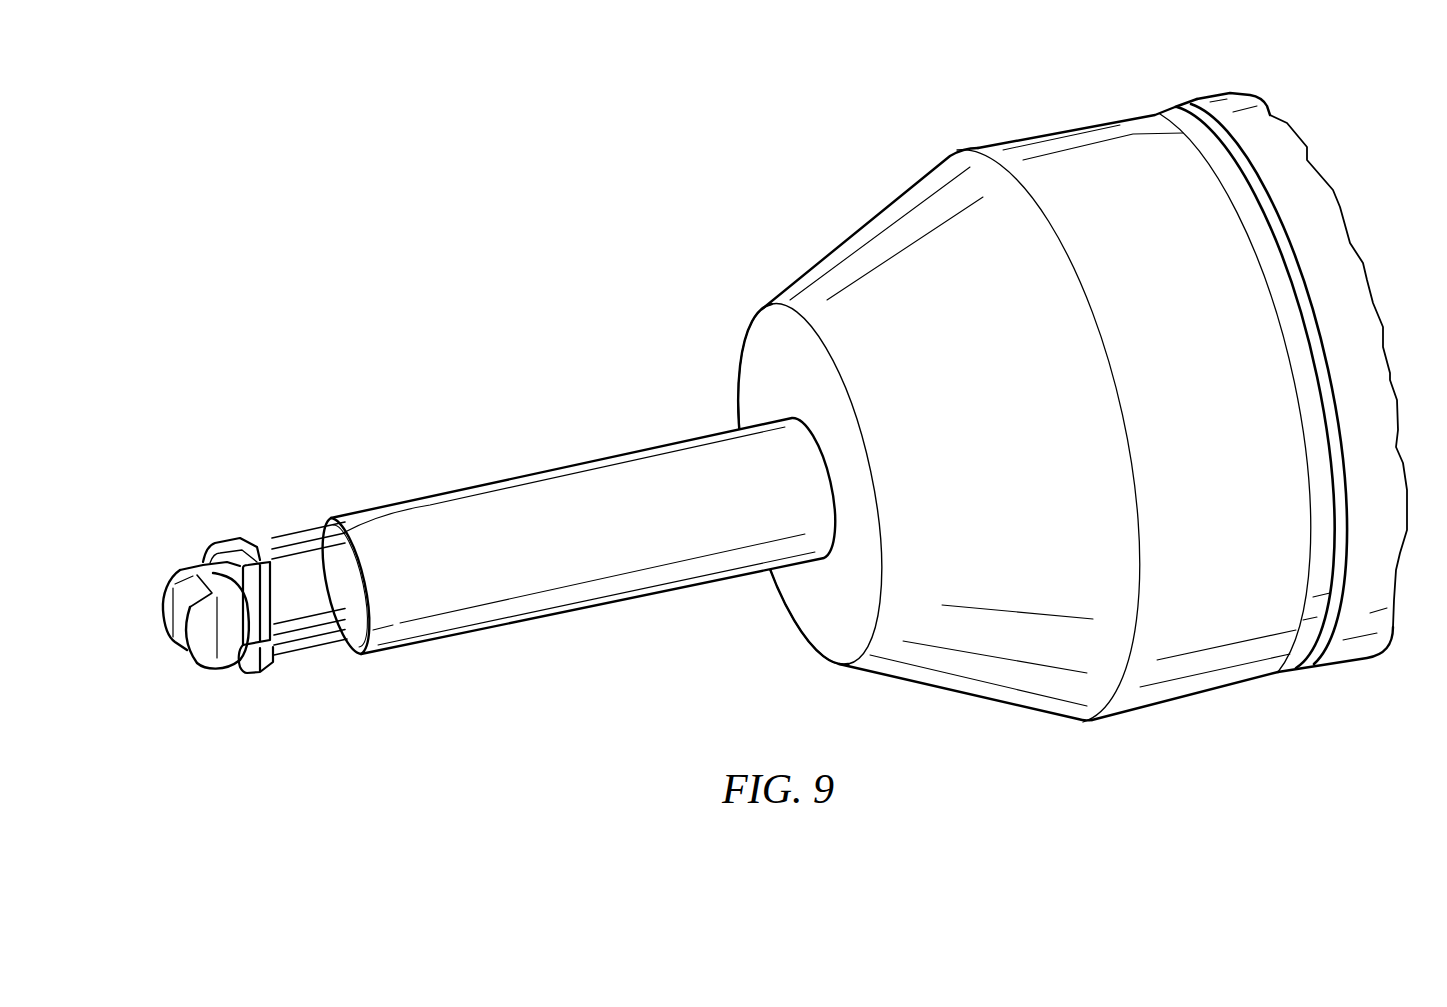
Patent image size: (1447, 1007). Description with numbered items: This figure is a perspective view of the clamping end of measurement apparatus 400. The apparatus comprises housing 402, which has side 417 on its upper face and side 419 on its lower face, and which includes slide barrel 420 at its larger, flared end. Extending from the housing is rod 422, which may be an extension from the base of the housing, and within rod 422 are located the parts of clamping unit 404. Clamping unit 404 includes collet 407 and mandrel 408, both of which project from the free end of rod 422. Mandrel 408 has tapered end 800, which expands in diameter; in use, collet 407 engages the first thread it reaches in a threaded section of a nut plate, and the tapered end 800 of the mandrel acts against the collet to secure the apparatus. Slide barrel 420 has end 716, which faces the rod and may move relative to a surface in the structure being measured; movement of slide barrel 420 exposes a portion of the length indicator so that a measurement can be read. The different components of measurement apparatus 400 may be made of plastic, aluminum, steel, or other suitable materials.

The measurement apparatus 400 is at (750, 392).
The housing 402 is at (1059, 400).
The clamping unit 404 is at (251, 573).
The collet 407 is at (345, 591).
The mandrel 408 is at (206, 671).
The side 417 is at (1067, 129).
The side 419 is at (1185, 701).
The slide barrel 420 is at (1200, 96).
The rod 422 is at (577, 463).
The end 716 is at (808, 618).
The tapered end 800 is at (167, 608).